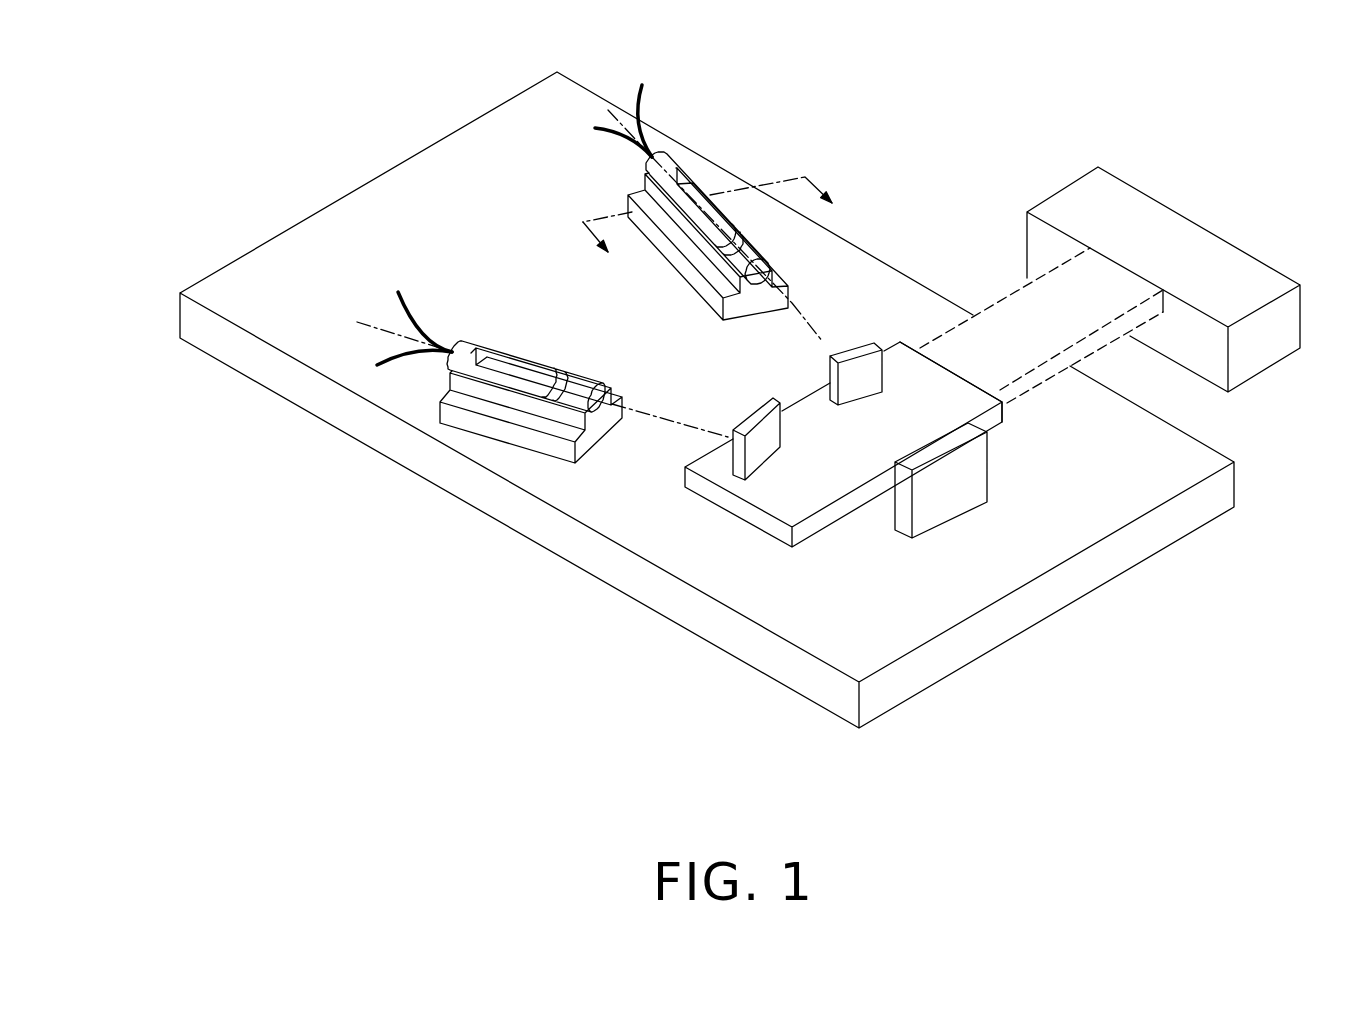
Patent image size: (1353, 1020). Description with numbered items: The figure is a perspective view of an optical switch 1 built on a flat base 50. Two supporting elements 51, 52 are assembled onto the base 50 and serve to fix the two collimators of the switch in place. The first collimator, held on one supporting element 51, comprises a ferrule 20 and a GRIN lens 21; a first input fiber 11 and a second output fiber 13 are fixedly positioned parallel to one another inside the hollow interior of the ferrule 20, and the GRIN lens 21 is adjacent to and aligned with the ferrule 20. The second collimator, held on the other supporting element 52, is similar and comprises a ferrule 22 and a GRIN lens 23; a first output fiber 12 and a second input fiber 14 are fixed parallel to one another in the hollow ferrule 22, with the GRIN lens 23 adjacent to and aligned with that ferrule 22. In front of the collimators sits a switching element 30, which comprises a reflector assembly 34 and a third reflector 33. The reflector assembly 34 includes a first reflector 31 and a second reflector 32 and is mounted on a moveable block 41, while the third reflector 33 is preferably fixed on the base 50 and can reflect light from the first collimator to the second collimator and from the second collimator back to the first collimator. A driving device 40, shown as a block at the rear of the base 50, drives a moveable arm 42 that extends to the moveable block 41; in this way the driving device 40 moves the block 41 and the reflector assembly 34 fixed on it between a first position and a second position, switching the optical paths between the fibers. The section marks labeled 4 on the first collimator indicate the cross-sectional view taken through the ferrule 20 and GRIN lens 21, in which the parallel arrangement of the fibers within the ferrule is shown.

The optical switch 1 is at (296, 110).
The section line of FIG. 4 is at (706, 209).
The first input fiber 11 is at (642, 102).
The first output fiber 12 is at (412, 315).
The second output fiber 13 is at (620, 130).
The second input fiber 14 is at (418, 357).
The ferrule 20 is at (763, 217).
The GRIN lens 21 is at (747, 255).
The ferrule 22 is at (542, 440).
The GRIN lens 23 is at (567, 400).
The switching element 30 is at (843, 503).
The first reflector 31 is at (855, 390).
The second reflector 32 is at (760, 440).
The third reflector 33 is at (941, 507).
The reflector assembly 34 is at (860, 590).
The driving device 40 is at (1215, 270).
The moveable block 41 is at (975, 398).
The moveable arm 42 is at (1070, 316).
The base 50 is at (337, 248).
The supporting element 51 is at (700, 262).
The supporting element 52 is at (502, 412).